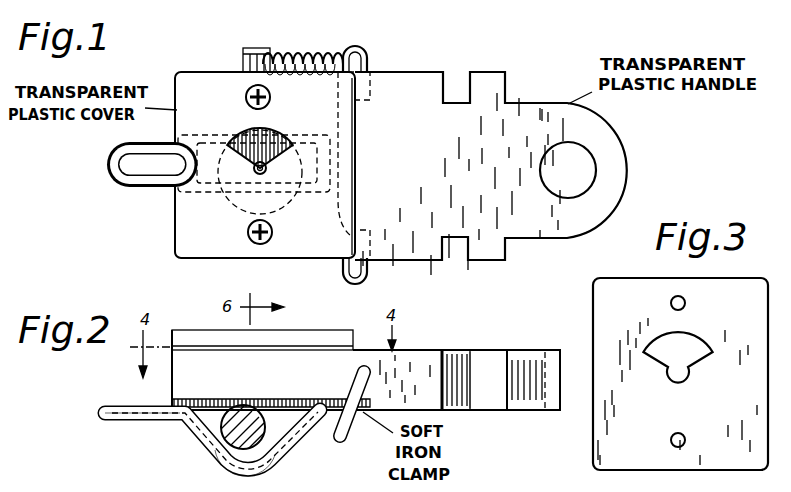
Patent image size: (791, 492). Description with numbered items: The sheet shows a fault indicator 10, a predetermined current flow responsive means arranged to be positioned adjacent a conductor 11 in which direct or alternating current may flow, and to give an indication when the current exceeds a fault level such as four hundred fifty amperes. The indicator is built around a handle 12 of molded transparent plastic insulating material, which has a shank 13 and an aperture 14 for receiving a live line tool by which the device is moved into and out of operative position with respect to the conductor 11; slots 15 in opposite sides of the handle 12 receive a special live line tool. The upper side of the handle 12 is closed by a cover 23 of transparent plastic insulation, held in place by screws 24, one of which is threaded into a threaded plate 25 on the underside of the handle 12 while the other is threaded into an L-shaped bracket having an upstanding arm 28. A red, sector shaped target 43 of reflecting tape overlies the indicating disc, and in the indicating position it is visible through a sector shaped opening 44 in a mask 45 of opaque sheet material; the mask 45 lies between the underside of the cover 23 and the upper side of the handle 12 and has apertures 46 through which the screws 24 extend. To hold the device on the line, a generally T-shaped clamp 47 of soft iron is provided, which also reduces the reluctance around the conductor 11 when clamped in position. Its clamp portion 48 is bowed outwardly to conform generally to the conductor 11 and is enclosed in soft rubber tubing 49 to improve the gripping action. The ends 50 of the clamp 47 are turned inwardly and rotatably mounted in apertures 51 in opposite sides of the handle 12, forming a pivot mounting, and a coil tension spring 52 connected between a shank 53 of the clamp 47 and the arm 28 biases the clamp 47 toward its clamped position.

In FIG. 1, the fault indicator 10 is at (218, 53).
In FIG. 2, the fault indicator 10 is at (424, 326).
In FIG. 2, the conductor 11 is at (208, 421).
In FIG. 1, the handle 12 is at (424, 78).
In FIG. 2, the handle 12 is at (420, 362).
In FIG. 1, the shank 13 is at (531, 108).
In FIG. 2, the shank 13 is at (546, 410).
In FIG. 1, the aperture 14 is at (582, 174).
In FIG. 2, the aperture 14 is at (545, 356).
In FIG. 1, the slots 15 is at (462, 87).
In FIG. 2, the slots 15 is at (462, 398).
In FIG. 1, the cover 23 is at (182, 225).
In FIG. 2, the cover 23 is at (291, 343).
In FIG. 1, the screws 24 is at (246, 96).
In FIG. 2, the threaded plate 25 is at (258, 400).
In FIG. 1, the upstanding arm 28 is at (251, 48).
In FIG. 1, the target 43 is at (250, 131).
In FIG. 3, the sector shaped opening 44 is at (691, 342).
In FIG. 3, the mask 45 is at (740, 281).
In FIG. 2, the apertures 46 is at (333, 349).
In FIG. 3, the apertures 46 is at (670, 303).
In FIG. 2, the clamp 47 is at (338, 432).
In FIG. 2, the clamp portion 48 is at (270, 464).
In FIG. 1, the soft rubber tubing 49 is at (172, 207).
In FIG. 2, the soft rubber tubing 49 is at (180, 430).
In FIG. 1, the ends 50 is at (369, 62).
In FIG. 1, the apertures 51 is at (372, 99).
In FIG. 1, the coil tension spring 52 is at (302, 43).
In FIG. 1, the shank 53 is at (353, 48).